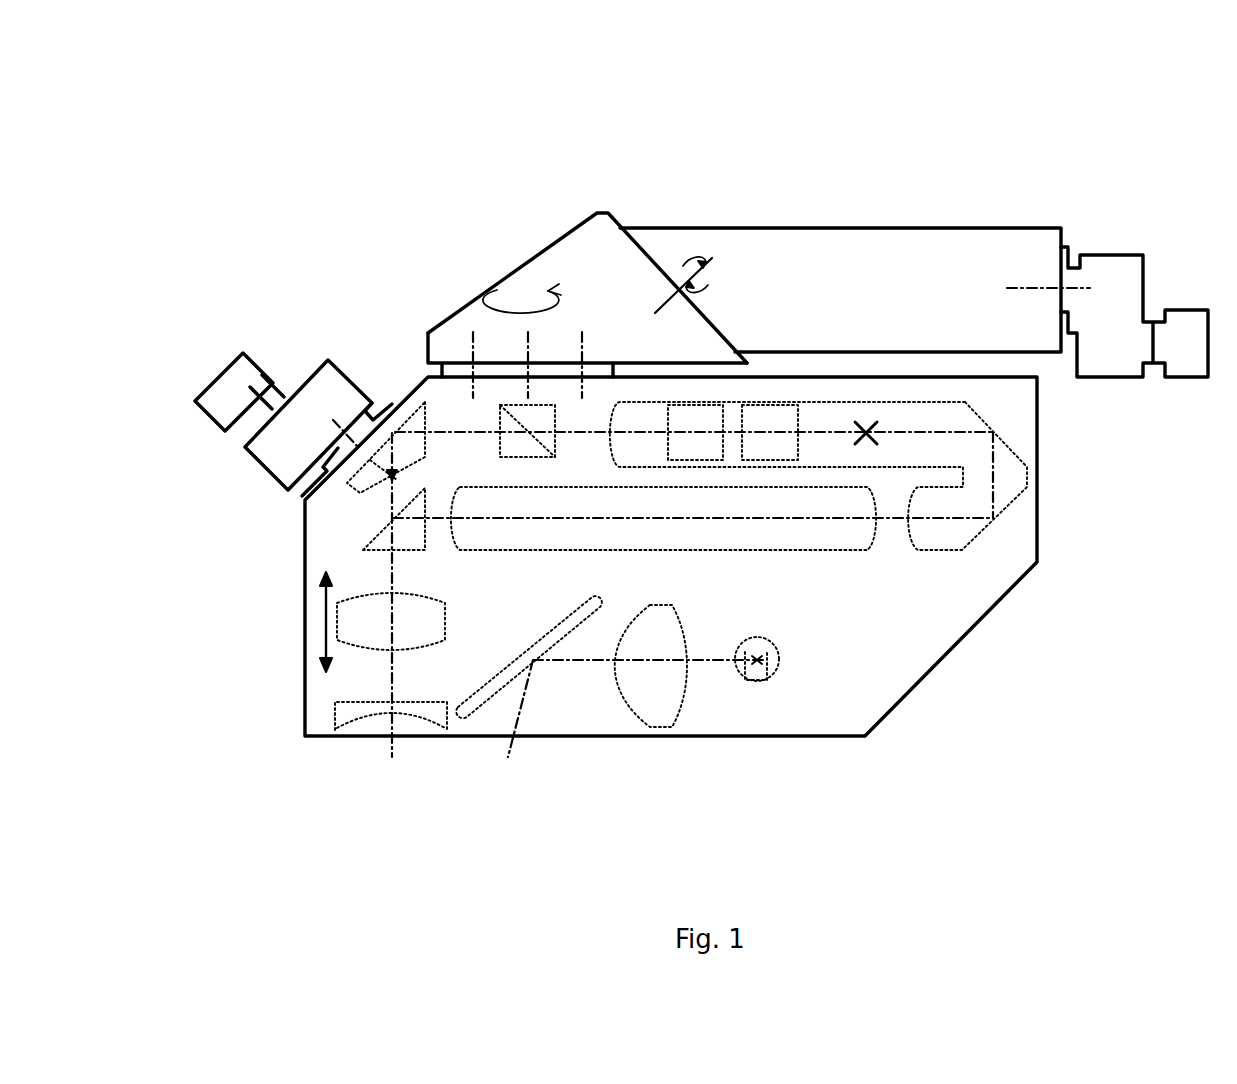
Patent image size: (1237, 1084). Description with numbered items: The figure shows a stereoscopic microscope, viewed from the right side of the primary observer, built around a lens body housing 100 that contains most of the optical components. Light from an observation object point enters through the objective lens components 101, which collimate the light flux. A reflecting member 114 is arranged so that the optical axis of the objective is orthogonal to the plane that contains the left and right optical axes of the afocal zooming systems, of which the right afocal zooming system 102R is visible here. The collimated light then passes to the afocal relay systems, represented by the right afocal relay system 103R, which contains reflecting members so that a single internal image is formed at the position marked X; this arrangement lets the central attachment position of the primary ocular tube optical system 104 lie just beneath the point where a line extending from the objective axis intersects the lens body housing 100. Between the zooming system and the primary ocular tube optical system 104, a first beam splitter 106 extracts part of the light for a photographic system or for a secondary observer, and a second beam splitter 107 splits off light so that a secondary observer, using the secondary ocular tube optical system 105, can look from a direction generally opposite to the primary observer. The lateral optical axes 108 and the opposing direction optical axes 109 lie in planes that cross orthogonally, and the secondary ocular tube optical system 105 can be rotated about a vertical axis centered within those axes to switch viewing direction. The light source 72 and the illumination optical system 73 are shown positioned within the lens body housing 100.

The lens body housing 100 is at (892, 668).
The objective lens components 101 is at (343, 717).
The right afocal zooming system 102R is at (558, 542).
The right afocal relay system 103R is at (937, 542).
The primary ocular tube optical system 104 is at (311, 387).
The secondary ocular tube optical system 105 is at (585, 282).
The first beam splitter 106 is at (755, 417).
The second beam splitter 107 is at (548, 420).
The lateral optical axes 108 is at (580, 354).
The opposing direction optical axes 109 is at (528, 337).
The reflecting member 114 is at (380, 544).
The light source 72 is at (757, 673).
The illumination optical system 73 is at (650, 700).